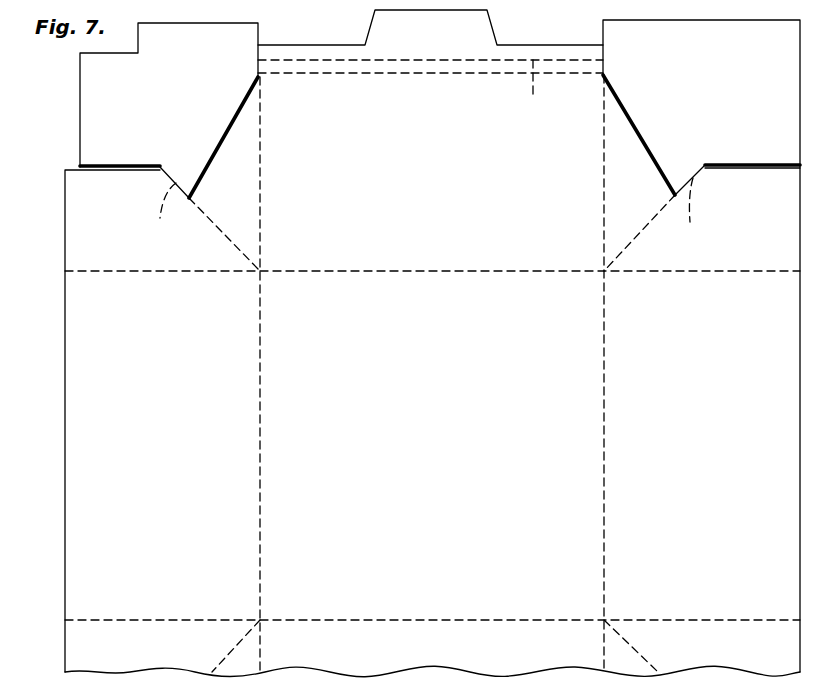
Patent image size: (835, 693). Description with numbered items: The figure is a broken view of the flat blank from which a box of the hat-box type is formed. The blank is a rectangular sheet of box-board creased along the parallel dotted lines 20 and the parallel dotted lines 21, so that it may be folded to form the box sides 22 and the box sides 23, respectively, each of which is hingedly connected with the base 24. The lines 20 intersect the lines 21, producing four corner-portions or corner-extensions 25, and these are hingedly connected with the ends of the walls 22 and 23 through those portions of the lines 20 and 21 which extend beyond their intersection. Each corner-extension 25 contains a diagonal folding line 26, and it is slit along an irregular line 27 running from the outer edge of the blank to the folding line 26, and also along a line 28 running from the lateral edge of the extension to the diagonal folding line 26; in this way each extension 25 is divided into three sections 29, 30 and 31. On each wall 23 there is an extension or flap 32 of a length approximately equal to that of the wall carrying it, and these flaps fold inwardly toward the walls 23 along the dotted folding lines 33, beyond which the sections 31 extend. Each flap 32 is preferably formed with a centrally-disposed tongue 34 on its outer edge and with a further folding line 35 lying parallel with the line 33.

The dotted folding lines 20 is at (262, 430).
The dotted folding lines 21 is at (490, 272).
The box sides 22 is at (432, 445).
The box sides 23 is at (432, 361).
The base 24 is at (432, 445).
The corner-extensions 25 is at (145, 95).
The diagonal folding line 26 is at (207, 218).
The irregular slit line 27 is at (224, 140).
The slit line 28 is at (118, 170).
The section 29 is at (432, 420).
The section 30 is at (432, 224).
The section 31 is at (480, 346).
The flap 32 is at (453, 48).
The dotted folding line 33 is at (360, 75).
The tongue 34 is at (430, 27).
The folding line 35 is at (548, 90).